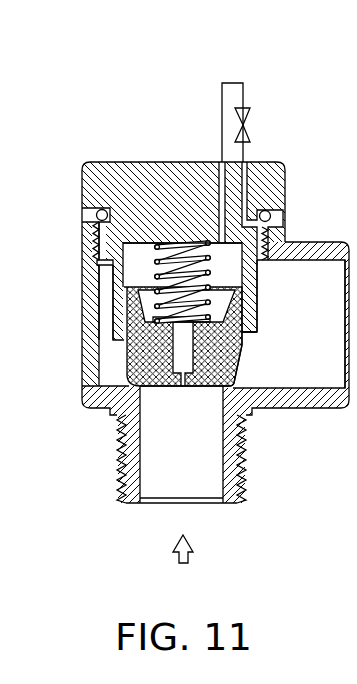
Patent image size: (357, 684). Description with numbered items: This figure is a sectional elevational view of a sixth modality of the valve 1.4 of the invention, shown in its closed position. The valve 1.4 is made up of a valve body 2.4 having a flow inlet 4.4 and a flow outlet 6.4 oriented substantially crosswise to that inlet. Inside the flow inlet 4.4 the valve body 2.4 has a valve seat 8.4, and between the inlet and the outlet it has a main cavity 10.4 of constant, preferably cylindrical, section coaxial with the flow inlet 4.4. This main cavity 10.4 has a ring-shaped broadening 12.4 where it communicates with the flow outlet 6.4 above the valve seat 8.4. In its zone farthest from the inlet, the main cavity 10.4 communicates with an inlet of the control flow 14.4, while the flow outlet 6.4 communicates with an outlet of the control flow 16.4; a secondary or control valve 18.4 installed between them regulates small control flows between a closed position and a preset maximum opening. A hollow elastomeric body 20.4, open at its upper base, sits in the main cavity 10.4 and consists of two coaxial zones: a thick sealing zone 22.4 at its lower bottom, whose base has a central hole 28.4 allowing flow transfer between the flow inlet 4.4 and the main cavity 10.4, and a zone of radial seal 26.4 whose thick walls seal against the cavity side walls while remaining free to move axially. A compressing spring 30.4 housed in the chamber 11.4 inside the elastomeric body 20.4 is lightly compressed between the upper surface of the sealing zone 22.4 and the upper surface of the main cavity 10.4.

The valve 1.4 is at (287, 160).
The valve body 2.4 is at (297, 228).
The flow inlet 4.4 is at (158, 482).
The flow outlet 6.4 is at (273, 310).
The valve seat 8.4 is at (100, 386).
The main cavity 10.4 is at (243, 333).
The chamber 11.4 is at (138, 270).
The ring-shaped broadening 12.4 is at (118, 347).
The inlet of the control flow 14.4 is at (217, 173).
The outlet of the control flow 16.4 is at (243, 182).
The secondary or control valve 18.4 is at (242, 104).
The elastomeric body 20.4 is at (115, 331).
The sealing zone 22.4 is at (240, 386).
The zone of radial seal 26.4 is at (127, 308).
The central hole 28.4 is at (180, 386).
The compressing spring 30.4 is at (147, 275).